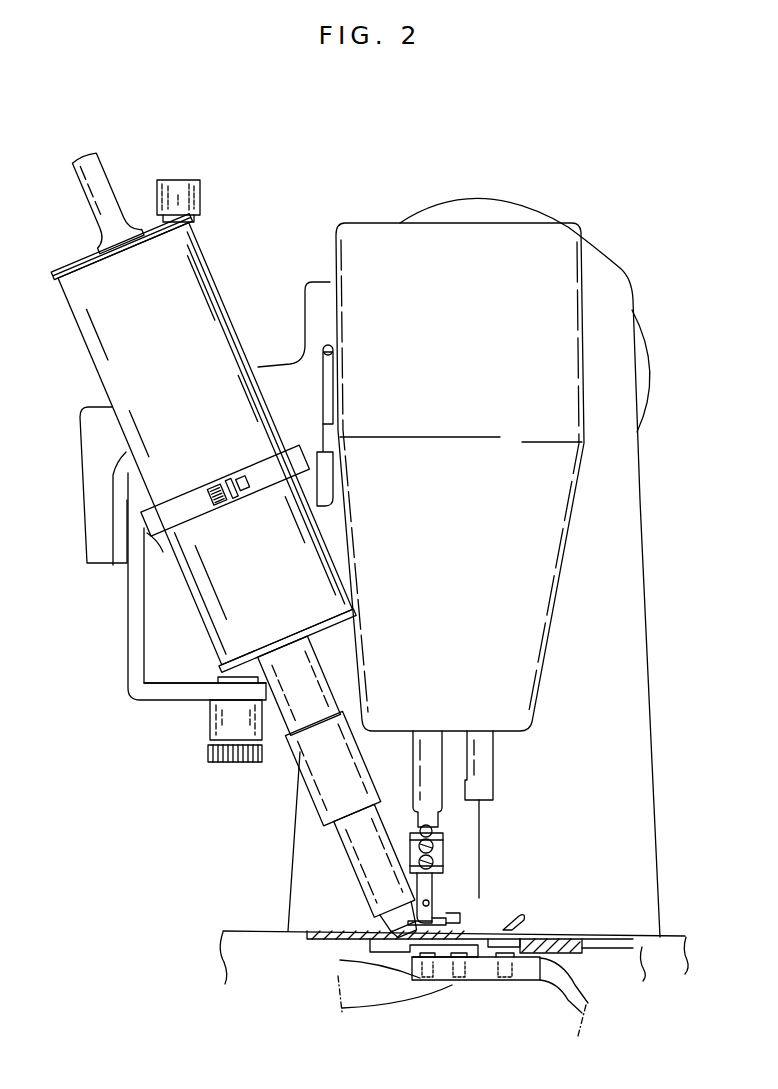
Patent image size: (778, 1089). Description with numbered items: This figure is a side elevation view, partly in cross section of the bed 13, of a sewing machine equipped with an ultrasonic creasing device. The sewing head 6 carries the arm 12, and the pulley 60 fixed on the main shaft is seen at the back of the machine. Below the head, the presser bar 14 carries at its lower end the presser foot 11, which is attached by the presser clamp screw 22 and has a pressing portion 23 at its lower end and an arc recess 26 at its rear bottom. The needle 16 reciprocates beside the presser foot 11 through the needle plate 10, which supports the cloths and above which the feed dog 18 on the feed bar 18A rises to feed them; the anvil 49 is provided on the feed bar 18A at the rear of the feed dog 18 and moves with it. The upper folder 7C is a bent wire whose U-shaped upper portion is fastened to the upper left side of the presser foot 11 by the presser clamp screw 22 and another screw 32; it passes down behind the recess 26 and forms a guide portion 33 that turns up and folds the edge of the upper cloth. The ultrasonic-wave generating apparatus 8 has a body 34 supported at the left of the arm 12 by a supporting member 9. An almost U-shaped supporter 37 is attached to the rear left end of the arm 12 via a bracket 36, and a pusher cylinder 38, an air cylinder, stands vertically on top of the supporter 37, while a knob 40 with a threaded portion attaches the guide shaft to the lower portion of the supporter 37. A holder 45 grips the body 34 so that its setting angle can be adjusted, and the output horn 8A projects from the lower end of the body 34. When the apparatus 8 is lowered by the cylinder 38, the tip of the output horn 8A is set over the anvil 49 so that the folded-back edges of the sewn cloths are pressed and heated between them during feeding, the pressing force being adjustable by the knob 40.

The sewing head 6 is at (641, 357).
The pulley 60 is at (651, 383).
The arm 12 is at (547, 593).
The presser bar 14 is at (413, 755).
The presser clamp screw 22 is at (410, 838).
The screw 32 is at (433, 858).
The presser foot 11 is at (441, 890).
The arc recess 26 is at (440, 910).
The needle 16 is at (500, 824).
The pressing portion 23 is at (507, 925).
The needle plate 10 is at (565, 934).
The bed 13 is at (681, 934).
The anvil 49 is at (400, 952).
The feed dog 18 is at (493, 982).
The feed bar 18A is at (377, 1012).
The bracket 36 is at (86, 467).
The supporting member 9 is at (105, 682).
The supporter 37 is at (143, 702).
The knob 40 is at (222, 763).
The pusher cylinder 38 is at (180, 190).
The ultrasonic-wave generating apparatus 8 is at (228, 294).
The body 34 is at (101, 346).
The holder 45 is at (256, 468).
The output horn 8A is at (337, 829).
The upper folder 7C is at (407, 860).
The guide portion 33 is at (378, 902).